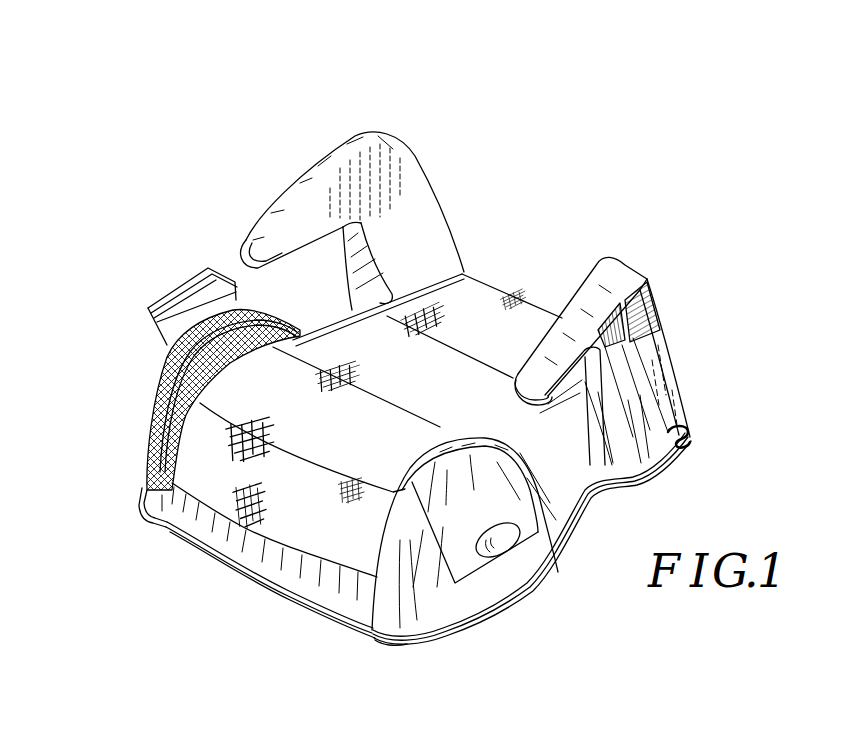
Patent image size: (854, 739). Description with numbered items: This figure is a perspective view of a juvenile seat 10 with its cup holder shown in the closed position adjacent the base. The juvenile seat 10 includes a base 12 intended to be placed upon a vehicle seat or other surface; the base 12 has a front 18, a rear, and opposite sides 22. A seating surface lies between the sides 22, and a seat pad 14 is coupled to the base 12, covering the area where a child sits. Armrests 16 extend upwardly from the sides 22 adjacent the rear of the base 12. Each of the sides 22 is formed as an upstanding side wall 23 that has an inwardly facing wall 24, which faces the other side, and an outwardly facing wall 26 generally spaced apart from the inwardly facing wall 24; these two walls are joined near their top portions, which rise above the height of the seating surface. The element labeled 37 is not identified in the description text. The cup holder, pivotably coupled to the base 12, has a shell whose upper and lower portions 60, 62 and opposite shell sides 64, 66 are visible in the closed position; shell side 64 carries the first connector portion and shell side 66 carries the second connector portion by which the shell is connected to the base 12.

The juvenile seat 10 is at (615, 98).
The base 12 is at (128, 513).
The seat pad 14 is at (487, 313).
The armrests 16 is at (314, 170).
The front 18 is at (258, 558).
The sides 22 is at (463, 603).
The side wall 23 is at (503, 580).
The inwardly facing wall 24 is at (270, 317).
The outwardly facing wall 26 is at (555, 472).
The lower rail 37 is at (350, 613).
The upper portion 60 is at (520, 527).
The lower portion 62 is at (548, 565).
The shell side 64 is at (400, 637).
The shell side 66 is at (557, 547).